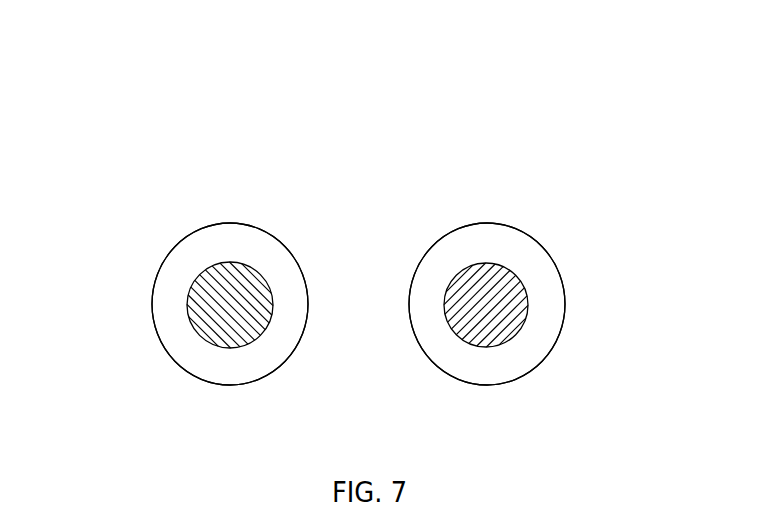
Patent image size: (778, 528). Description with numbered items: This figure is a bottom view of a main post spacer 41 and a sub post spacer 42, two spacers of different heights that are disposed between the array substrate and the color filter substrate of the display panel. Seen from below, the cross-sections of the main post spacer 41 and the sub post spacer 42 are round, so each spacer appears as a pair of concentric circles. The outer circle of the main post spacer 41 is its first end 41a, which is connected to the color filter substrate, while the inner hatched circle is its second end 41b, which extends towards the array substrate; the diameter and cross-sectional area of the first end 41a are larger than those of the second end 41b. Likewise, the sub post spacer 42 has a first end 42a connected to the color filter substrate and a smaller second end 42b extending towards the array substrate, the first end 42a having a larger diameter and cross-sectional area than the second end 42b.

The main post spacer 41 is at (534, 212).
The first end of the main post spacer 41a is at (552, 270).
The second end of the main post spacer 41b is at (500, 315).
The sub post spacer 42 is at (146, 237).
The first end of the sub post spacer 42a is at (158, 277).
The second end of the sub post spacer 42b is at (229, 314).